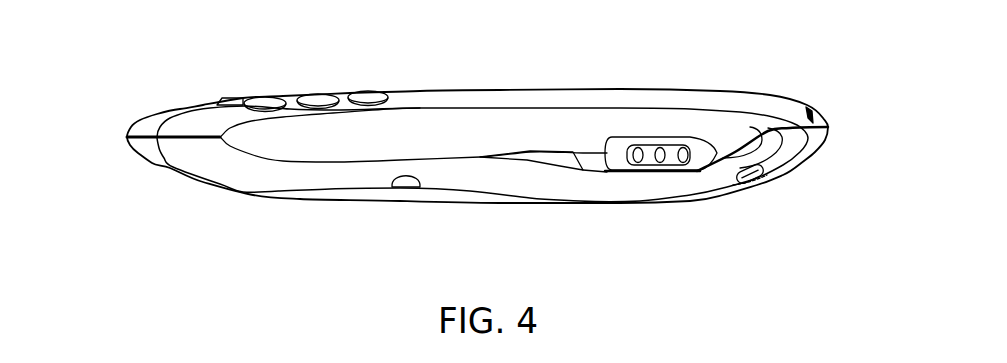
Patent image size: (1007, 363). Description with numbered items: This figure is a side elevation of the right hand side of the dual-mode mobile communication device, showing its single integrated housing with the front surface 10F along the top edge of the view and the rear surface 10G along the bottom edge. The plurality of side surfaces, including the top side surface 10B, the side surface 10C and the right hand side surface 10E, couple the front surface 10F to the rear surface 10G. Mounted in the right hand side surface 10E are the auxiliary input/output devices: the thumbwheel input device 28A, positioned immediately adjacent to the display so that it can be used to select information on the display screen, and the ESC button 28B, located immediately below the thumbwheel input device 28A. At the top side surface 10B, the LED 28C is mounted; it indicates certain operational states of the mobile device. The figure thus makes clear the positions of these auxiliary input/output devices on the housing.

The top side surface 10B is at (827, 138).
The side surface 10C is at (130, 148).
The right hand side surface 10E is at (268, 146).
The front surface 10F is at (733, 92).
The rear surface 10G is at (368, 197).
The thumbwheel input device 28A is at (700, 167).
The ESC button 28B is at (582, 172).
The LED 28C is at (810, 117).